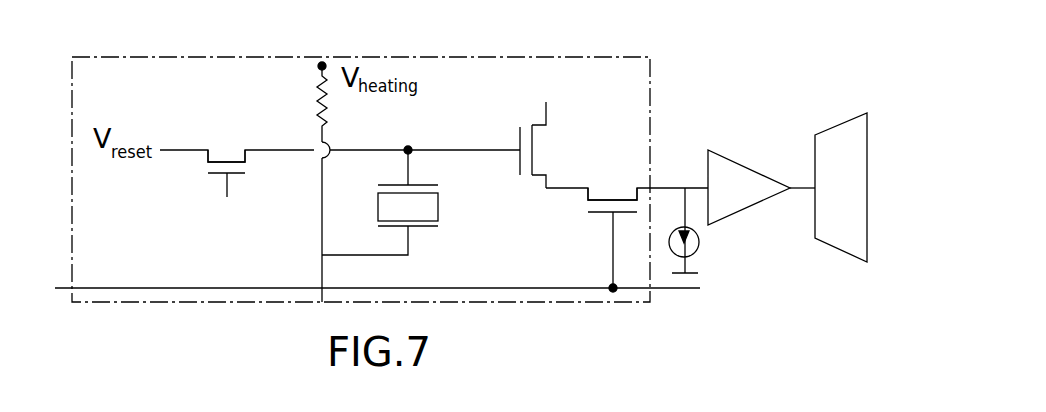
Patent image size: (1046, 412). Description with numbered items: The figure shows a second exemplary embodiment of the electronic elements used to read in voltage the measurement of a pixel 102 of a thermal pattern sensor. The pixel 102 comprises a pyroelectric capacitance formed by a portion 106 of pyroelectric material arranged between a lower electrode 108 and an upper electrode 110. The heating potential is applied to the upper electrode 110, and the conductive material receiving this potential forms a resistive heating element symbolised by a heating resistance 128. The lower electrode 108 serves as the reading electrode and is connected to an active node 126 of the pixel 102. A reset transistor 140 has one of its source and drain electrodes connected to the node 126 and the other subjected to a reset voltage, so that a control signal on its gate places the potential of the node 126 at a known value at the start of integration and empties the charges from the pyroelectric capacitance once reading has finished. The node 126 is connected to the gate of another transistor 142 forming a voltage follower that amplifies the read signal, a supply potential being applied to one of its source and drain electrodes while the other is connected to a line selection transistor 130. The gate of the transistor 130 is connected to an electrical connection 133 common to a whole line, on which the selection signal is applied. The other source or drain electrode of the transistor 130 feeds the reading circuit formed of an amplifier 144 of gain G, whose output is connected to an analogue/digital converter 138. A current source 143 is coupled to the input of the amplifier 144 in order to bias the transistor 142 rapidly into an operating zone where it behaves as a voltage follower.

The pixel 102 is at (590, 57).
The heating resistance 128 is at (317, 88).
The reset transistor 140 is at (225, 146).
The active node 126 is at (412, 146).
The portion of pyroelectric material 106 is at (374, 217).
The lower electrode 108 is at (425, 187).
The upper electrode 110 is at (428, 228).
The transistor 142 is at (557, 137).
The line selection transistor 130 is at (613, 192).
The electrical connection 133 is at (553, 287).
The current source 143 is at (699, 244).
The amplifier 144 is at (748, 183).
The analogue/digital converter 138 is at (843, 137).